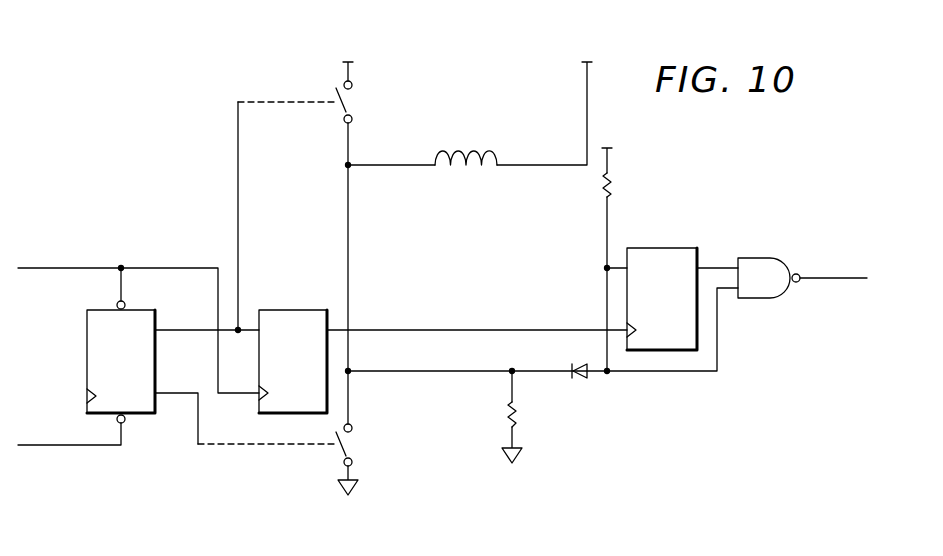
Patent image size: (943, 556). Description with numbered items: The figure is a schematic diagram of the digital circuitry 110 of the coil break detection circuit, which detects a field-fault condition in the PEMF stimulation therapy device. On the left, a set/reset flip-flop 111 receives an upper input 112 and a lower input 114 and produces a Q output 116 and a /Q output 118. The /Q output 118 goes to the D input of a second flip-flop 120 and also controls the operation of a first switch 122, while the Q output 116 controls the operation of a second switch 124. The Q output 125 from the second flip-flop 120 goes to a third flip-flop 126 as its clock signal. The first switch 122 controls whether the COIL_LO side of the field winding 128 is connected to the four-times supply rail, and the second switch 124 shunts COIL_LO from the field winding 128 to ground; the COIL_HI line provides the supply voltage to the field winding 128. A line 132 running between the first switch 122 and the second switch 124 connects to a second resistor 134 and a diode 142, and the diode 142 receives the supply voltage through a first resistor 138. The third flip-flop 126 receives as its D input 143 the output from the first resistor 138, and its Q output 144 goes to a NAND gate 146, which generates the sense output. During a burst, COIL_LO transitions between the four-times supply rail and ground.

The digital circuitry 110 is at (178, 79).
The U1 set/reset flip-flop 111 is at (87, 362).
The upper input 112 is at (44, 272).
The lower input 114 is at (44, 450).
The Q output 116 is at (172, 390).
The /Q output 118 is at (172, 327).
The U2 flip-flop 120 is at (300, 308).
The S1 switch 122 is at (337, 108).
The S2 switch 124 is at (338, 452).
The Q output 125 is at (360, 328).
The U3 flip-flop 126 is at (665, 246).
The L1 field winding 128 is at (427, 168).
The line 132 is at (350, 398).
The R2 resistor 134 is at (505, 402).
The R1 resistor 138 is at (600, 190).
The D1 diode 142 is at (576, 380).
The D input 143 is at (607, 268).
The Q output 144 is at (720, 265).
The U4 NAND gate 146 is at (762, 300).